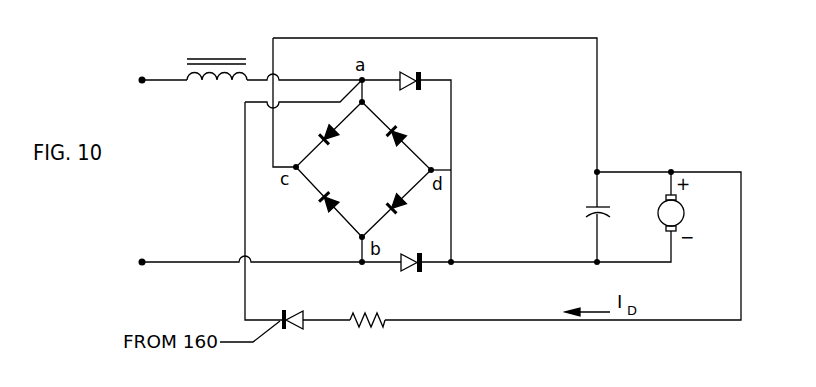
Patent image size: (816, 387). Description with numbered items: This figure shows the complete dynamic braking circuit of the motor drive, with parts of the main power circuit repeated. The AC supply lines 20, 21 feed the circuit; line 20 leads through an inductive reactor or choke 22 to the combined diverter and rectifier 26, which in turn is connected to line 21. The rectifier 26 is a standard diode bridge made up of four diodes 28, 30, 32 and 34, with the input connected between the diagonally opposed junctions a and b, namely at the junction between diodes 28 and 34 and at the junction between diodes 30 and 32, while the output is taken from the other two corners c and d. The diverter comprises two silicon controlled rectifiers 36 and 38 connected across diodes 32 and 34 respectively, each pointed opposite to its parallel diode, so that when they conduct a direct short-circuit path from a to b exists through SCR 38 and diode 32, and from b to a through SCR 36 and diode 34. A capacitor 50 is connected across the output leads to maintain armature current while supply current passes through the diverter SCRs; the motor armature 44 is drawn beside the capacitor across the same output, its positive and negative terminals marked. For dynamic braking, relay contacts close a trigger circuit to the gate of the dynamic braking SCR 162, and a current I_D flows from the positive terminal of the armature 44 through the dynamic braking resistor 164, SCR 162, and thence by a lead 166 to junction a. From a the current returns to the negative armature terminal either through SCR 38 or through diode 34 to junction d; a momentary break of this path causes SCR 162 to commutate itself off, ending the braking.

The AC supply line 20 is at (141, 90).
The AC supply line 21 is at (141, 274).
The inductive reactor or choke 22 is at (217, 60).
The rectifier 26 is at (378, 178).
The diode 28 is at (315, 133).
The diode 30 is at (317, 206).
The diode 32 is at (406, 207).
The diode 34 is at (405, 134).
The thyristor (SCR) 36 is at (472, 282).
The thyristor (SCR) 38 is at (469, 61).
The motor 44 is at (686, 213).
The capacitor 50 is at (581, 212).
The dynamic braking SCR 162 is at (288, 309).
The dynamic braking resistor 164 is at (367, 309).
The lead 166 is at (245, 223).